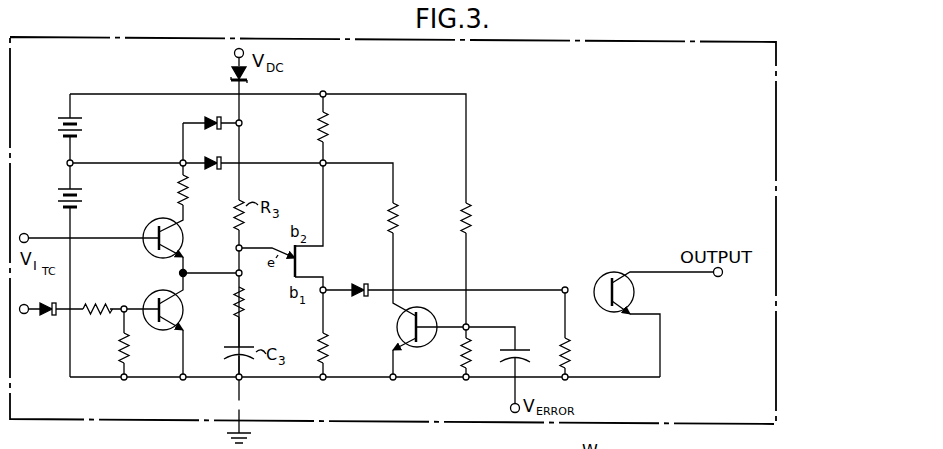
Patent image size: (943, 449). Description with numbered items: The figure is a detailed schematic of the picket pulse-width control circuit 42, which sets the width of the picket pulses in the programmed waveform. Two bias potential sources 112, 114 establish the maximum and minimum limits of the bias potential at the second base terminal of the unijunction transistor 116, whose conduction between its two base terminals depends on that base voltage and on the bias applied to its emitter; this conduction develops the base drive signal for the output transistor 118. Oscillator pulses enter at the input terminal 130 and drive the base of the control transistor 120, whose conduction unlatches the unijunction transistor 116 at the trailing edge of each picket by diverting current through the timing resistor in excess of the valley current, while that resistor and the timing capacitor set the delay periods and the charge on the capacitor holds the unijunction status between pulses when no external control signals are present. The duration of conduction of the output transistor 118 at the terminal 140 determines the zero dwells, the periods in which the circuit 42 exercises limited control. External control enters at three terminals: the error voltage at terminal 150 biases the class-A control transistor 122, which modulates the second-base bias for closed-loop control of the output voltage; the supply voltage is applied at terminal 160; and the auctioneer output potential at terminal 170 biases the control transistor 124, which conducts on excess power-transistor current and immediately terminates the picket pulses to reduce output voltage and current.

The picket pulse-width control circuit 42 is at (823, 106).
The circuit terminal 160 is at (234, 53).
The bias potential source 114 is at (83, 128).
The bias potential source 112 is at (82, 202).
The circuit terminal 170 is at (24, 233).
The control transistor 124 is at (160, 219).
The control transistor 120 is at (160, 290).
The pulse-width control circuit input terminal 130 is at (26, 314).
The unijunction transistor 116 is at (339, 270).
The control transistor 122 is at (397, 323).
The output transistor 118 is at (623, 271).
The terminal 140 is at (722, 277).
The circuit terminal 150 is at (511, 408).